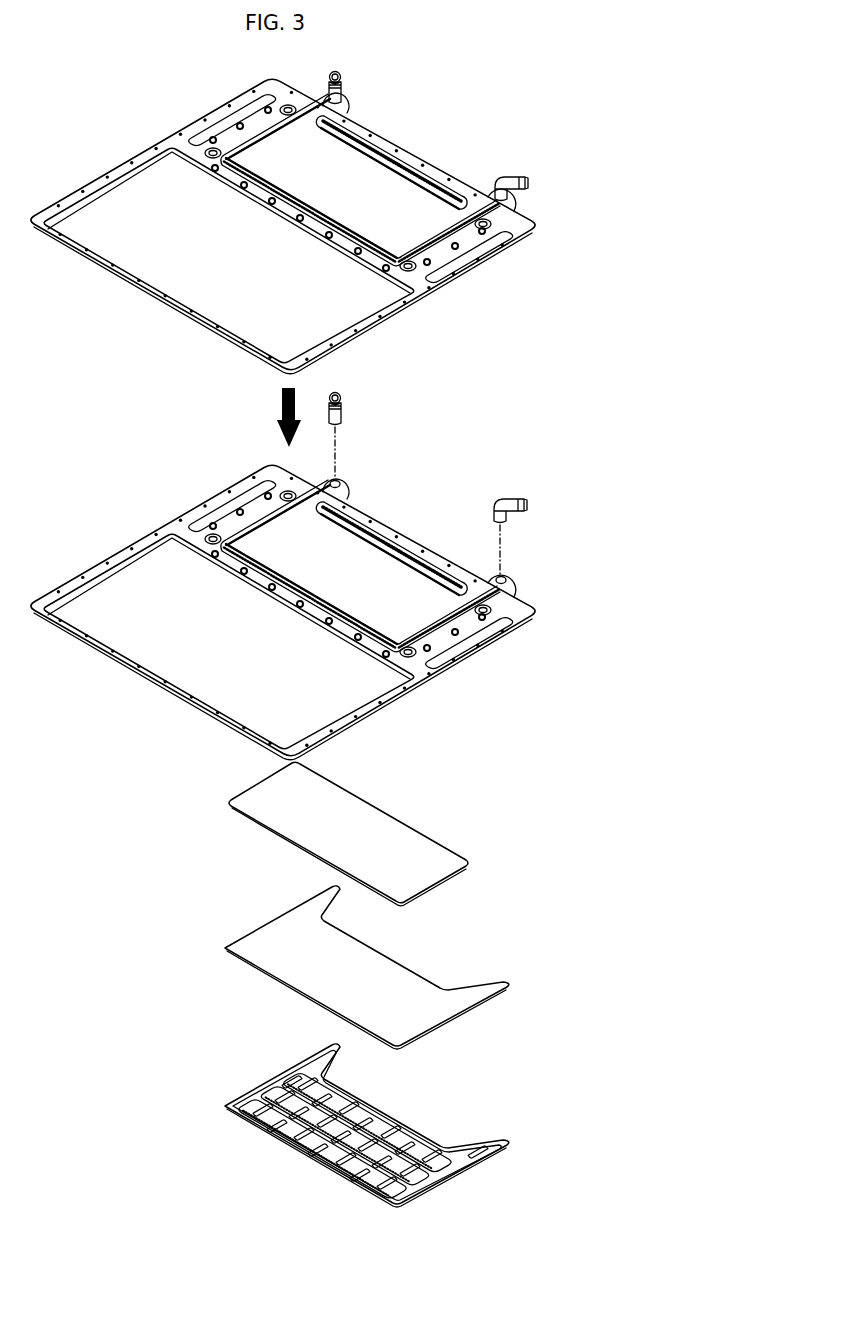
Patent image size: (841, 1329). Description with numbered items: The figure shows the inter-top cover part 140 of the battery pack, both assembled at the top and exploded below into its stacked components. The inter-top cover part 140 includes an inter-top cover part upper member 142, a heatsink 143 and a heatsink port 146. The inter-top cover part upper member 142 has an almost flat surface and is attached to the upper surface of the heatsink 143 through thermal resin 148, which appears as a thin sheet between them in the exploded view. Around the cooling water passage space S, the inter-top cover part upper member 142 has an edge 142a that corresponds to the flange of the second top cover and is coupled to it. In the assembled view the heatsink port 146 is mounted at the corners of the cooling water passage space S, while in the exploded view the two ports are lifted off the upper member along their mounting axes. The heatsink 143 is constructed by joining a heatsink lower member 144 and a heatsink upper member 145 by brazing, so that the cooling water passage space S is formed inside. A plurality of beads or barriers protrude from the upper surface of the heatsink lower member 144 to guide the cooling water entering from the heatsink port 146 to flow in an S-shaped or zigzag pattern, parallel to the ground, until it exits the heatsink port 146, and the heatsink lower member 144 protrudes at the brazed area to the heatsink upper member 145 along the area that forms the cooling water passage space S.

The inter-top cover part 140 is at (283, 223).
The inter-top cover part upper member 142 is at (403, 534).
The edge 142a is at (113, 277).
The cooling water passage space S is at (364, 168).
The heatsink port 146 is at (342, 404).
The thermal resin 148 is at (380, 824).
The heatsink 143 is at (367, 1046).
The heatsink upper member 145 is at (383, 1034).
The heatsink lower member 144 is at (380, 1117).